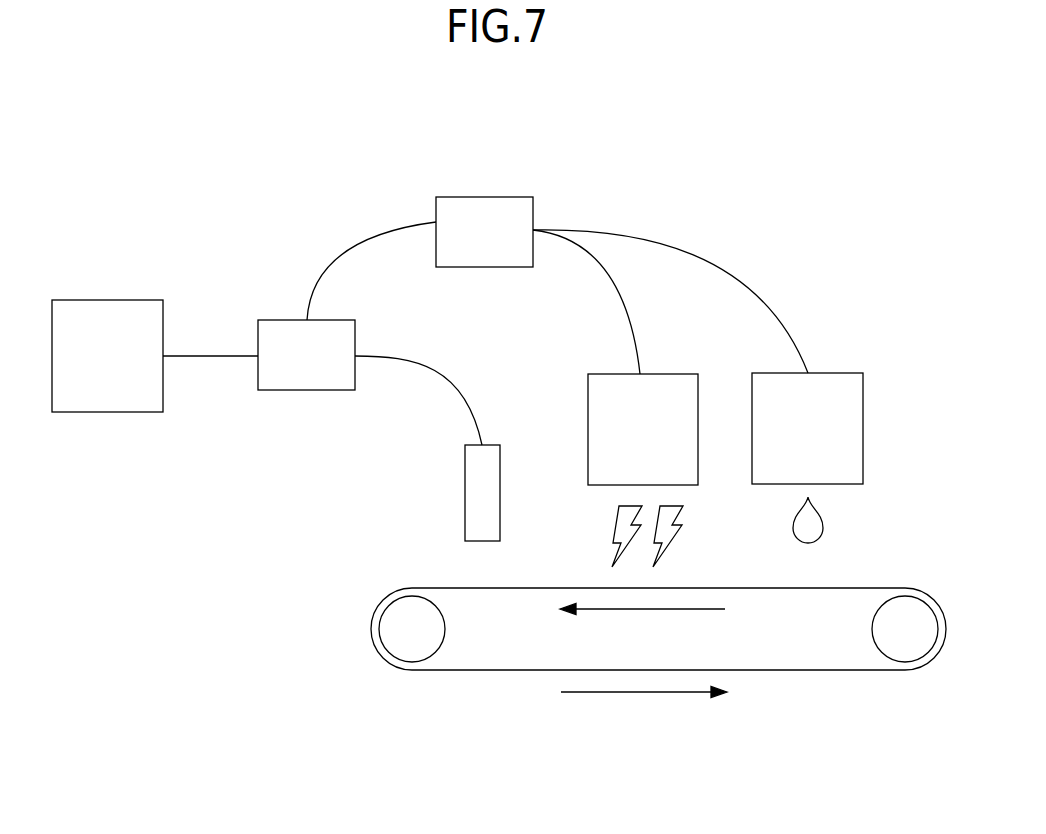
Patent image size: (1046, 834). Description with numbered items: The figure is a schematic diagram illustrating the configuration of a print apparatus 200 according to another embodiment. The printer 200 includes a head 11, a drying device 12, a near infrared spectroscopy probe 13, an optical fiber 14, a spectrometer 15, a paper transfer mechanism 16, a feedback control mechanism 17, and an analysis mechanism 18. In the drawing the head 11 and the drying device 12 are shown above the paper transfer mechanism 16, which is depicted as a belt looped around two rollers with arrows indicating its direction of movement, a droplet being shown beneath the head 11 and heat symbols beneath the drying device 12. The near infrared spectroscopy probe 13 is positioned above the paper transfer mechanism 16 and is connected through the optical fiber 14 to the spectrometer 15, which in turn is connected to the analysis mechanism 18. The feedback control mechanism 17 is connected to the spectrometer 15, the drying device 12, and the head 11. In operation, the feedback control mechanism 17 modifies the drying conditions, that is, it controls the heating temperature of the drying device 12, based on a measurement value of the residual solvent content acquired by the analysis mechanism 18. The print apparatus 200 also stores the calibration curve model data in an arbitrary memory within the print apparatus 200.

The print apparatus 200 is at (252, 143).
The head 11 is at (820, 373).
The drying device 12 is at (657, 374).
The near infrared spectroscopy probe 13 is at (495, 445).
The optical fiber 14 is at (433, 368).
The spectrometer 15 is at (327, 320).
The paper transfer mechanism 16 is at (877, 587).
The feedback control mechanism 17 is at (505, 197).
The analysis mechanism 18 is at (120, 299).